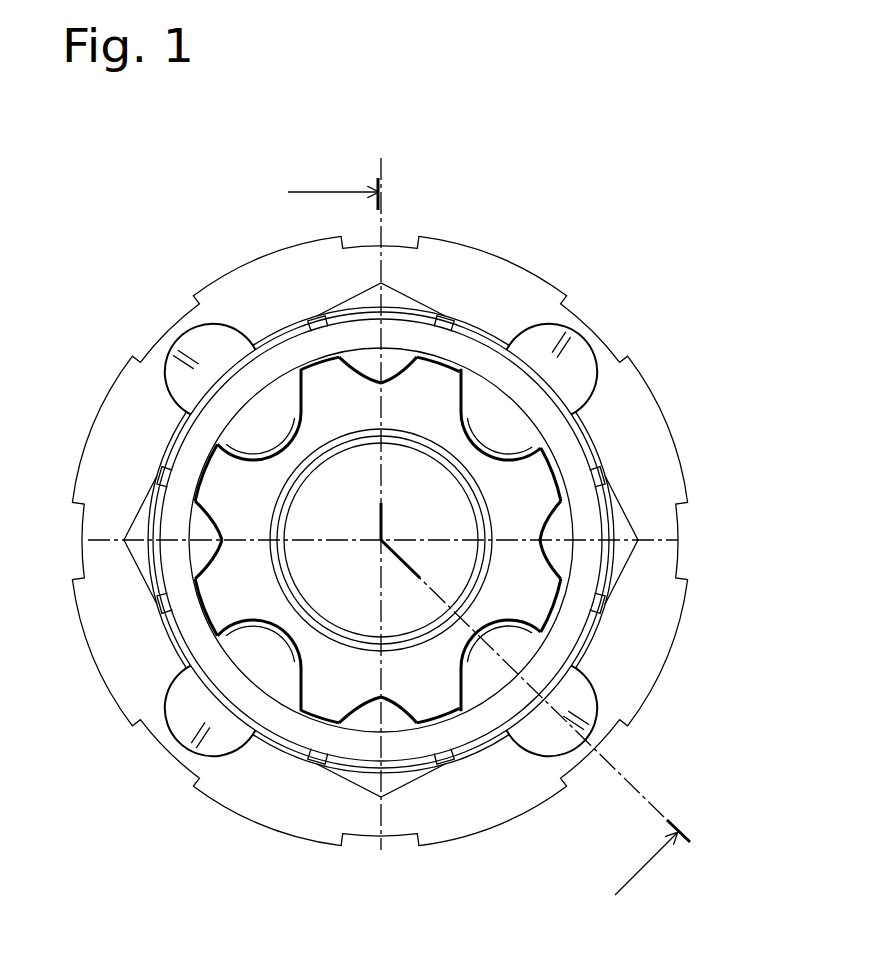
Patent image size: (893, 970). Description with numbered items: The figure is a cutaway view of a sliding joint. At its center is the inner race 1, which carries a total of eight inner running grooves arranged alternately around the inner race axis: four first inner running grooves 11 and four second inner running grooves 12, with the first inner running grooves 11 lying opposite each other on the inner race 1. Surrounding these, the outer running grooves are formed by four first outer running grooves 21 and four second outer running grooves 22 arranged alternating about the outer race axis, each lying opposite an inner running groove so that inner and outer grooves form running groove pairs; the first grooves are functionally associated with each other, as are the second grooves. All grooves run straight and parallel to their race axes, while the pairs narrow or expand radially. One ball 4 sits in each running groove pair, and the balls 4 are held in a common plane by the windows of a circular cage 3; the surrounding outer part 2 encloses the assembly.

The inner race 1 is at (473, 417).
The housing 2 is at (252, 808).
The circular cage 3 is at (250, 733).
The ball 4 is at (183, 698).
The first inner running grooves 11 is at (430, 395).
The second inner running grooves 12 is at (470, 423).
The first outer running grooves 21 is at (347, 362).
The second outer running grooves 22 is at (497, 398).